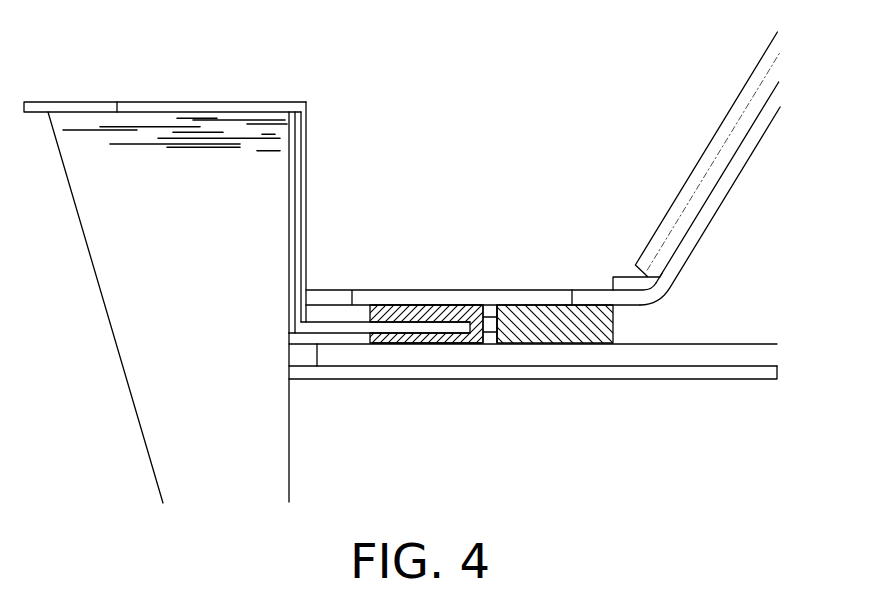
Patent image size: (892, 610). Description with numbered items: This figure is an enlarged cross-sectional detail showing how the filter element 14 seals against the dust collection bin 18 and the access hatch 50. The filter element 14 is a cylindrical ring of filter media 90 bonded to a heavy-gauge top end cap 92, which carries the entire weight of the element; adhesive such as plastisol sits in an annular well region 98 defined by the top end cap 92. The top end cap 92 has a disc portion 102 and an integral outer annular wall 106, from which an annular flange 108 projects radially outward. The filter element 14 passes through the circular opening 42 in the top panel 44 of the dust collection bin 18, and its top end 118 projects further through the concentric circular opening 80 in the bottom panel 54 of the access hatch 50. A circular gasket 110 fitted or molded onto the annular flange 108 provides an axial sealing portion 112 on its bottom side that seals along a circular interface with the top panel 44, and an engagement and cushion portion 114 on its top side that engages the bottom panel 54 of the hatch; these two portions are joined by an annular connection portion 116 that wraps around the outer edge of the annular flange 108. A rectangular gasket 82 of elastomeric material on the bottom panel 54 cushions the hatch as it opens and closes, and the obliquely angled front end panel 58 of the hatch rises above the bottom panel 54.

The filter element 14 is at (144, 113).
The dust collection bin 18 is at (738, 338).
The circular opening 42 is at (322, 360).
The top panel 44 is at (497, 350).
The access hatch 50 is at (748, 165).
The bottom panel 54 is at (492, 290).
The front end panel 58 is at (742, 127).
The circular opening 80 is at (352, 290).
The rectangular gasket 82 is at (587, 333).
The filter media 90 is at (137, 358).
The top end cap 92 is at (90, 95).
The annular well region 98 is at (230, 125).
The disc portion 102 is at (258, 102).
The outer annular wall 106 is at (307, 137).
The annular flange 108 is at (360, 327).
The circular gasket 110 is at (405, 300).
The axial sealing portion 112 is at (423, 344).
The engagement and cushion portion 114 is at (458, 305).
The annular connection portion 116 is at (507, 305).
The top end 118 is at (340, 165).